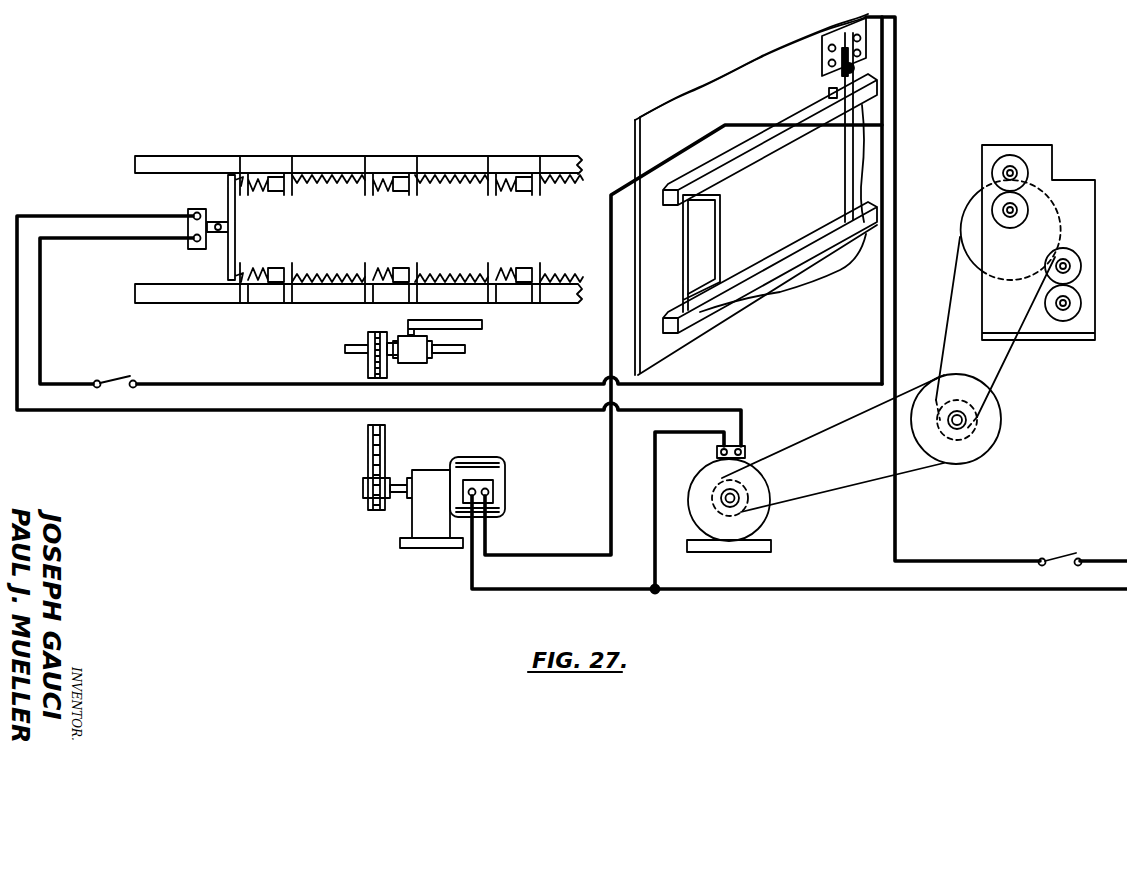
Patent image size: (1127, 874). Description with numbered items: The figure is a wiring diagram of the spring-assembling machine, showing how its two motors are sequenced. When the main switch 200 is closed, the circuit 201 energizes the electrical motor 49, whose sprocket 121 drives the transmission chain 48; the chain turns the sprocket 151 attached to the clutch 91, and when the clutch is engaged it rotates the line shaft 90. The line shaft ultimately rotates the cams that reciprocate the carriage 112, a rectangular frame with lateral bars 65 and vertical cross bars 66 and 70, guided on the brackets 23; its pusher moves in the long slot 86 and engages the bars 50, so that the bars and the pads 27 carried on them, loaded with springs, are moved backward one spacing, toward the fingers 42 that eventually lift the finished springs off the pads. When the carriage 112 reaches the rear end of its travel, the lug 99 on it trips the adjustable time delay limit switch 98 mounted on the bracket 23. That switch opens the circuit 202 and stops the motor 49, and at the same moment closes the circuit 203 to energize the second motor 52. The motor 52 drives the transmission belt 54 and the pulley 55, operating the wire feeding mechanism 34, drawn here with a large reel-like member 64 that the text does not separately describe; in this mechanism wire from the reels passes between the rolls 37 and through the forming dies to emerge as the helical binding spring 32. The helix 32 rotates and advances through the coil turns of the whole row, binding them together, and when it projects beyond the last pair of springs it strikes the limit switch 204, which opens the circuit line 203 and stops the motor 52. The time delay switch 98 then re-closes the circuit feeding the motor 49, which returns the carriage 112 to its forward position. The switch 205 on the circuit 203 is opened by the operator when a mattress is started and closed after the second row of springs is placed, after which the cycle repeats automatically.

The bracket 23 is at (653, 356).
The pad 27 is at (377, 156).
The helical binding spring 32 is at (322, 186).
The wire feeding mechanism 34 is at (1067, 174).
The rolls 37 is at (1062, 314).
The fingers 42 is at (482, 326).
The transmission chain 48 is at (368, 463).
The electrical motor 49 is at (500, 500).
The bar 50 is at (432, 164).
The motor 52 is at (748, 514).
The transmission belt 54 is at (928, 474).
The pulley 55 is at (996, 424).
The drum 64 is at (978, 318).
The lateral bar 65 is at (717, 304).
The cross bar 66 is at (683, 296).
The cross bar 70 is at (846, 184).
The long slot 86 is at (703, 278).
The line shaft 90 is at (466, 355).
The clutch 91 is at (413, 362).
The limit switch 98 is at (872, 34).
The lug 99 is at (812, 123).
The carriage 112 is at (753, 163).
The sprocket 121 is at (368, 503).
The sprocket 151 is at (356, 340).
The main switch 200 is at (1068, 562).
The circuit 201 is at (782, 591).
The circuit 202 is at (703, 137).
The circuit 203 is at (104, 412).
The limit switch 204 is at (197, 210).
The switch 205 is at (128, 377).